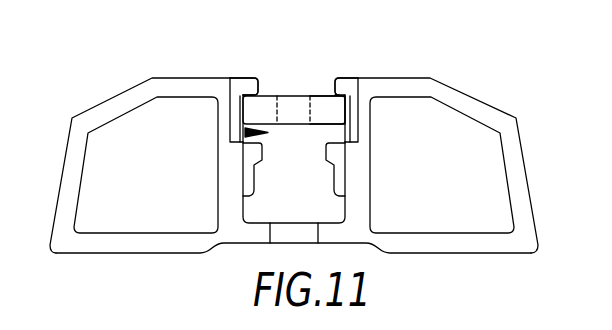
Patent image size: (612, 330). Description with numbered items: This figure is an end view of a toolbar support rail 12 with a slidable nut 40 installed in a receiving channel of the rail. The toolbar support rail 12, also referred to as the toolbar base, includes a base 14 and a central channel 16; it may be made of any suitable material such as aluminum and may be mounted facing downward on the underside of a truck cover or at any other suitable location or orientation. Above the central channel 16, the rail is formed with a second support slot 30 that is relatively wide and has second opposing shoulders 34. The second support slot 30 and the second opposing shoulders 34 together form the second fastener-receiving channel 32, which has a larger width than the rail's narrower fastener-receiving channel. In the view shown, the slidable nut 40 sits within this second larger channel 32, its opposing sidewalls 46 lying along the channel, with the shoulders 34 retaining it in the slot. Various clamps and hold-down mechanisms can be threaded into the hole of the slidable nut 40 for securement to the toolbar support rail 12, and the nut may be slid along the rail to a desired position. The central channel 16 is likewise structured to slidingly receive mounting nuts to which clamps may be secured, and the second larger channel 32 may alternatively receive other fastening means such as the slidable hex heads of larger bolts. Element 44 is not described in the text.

The toolbar support rail 12 is at (72, 118).
The base 14 is at (133, 255).
The central channel 16 is at (258, 201).
The second support slot 30 is at (221, 133).
The second fastener-receiving channel 32 is at (238, 120).
The second opposing shoulders 34 is at (240, 82).
The slidable nut 40 is at (319, 96).
The retainer 44 is at (294, 96).
The opposing sidewalls 46 is at (242, 105).